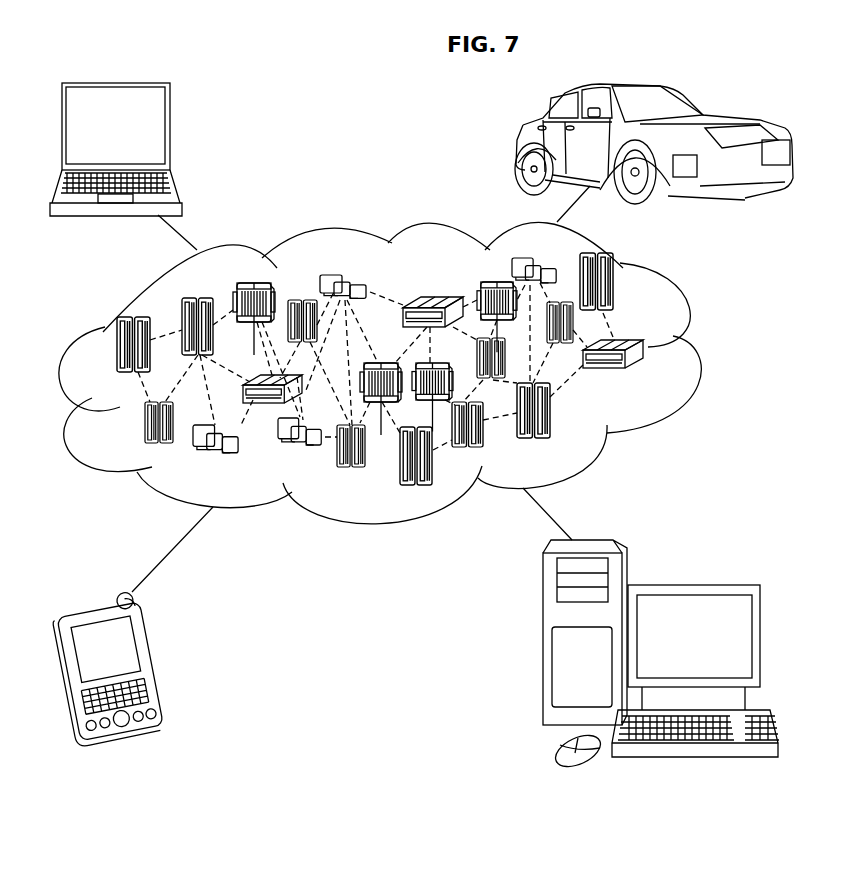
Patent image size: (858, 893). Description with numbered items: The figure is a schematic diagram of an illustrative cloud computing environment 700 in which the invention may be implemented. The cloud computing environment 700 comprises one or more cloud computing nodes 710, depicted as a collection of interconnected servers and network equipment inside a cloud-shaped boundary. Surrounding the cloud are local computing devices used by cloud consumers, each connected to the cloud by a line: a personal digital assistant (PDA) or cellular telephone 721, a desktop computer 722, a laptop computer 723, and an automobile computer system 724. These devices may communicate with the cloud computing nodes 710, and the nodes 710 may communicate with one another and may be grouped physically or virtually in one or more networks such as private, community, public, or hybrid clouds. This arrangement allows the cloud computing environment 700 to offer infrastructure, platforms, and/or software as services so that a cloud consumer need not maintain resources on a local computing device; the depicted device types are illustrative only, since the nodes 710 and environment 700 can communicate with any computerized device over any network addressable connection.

The cloud computing environment 700 is at (694, 354).
The cloud computing nodes 710 is at (644, 377).
The personal digital assistant (PDA) or cellular telephone 721 is at (166, 662).
The desktop computer 722 is at (690, 585).
The laptop computer 723 is at (171, 136).
The automobile computer system 724 is at (515, 150).